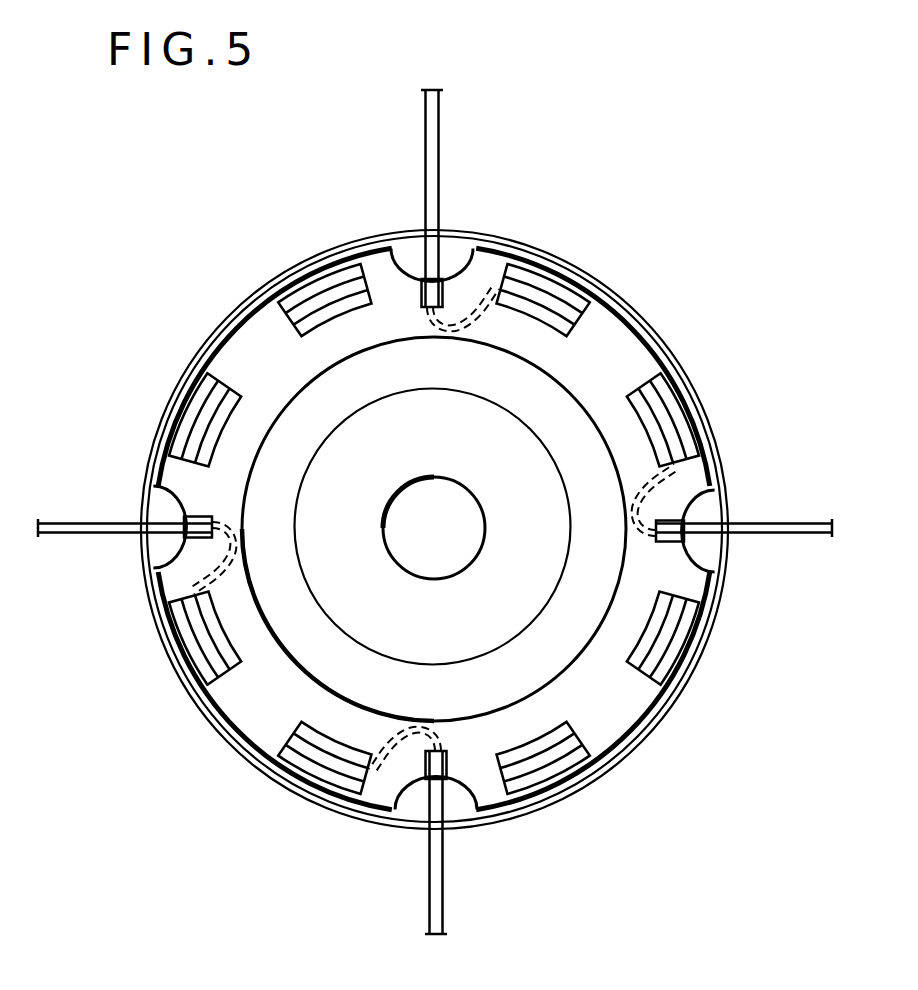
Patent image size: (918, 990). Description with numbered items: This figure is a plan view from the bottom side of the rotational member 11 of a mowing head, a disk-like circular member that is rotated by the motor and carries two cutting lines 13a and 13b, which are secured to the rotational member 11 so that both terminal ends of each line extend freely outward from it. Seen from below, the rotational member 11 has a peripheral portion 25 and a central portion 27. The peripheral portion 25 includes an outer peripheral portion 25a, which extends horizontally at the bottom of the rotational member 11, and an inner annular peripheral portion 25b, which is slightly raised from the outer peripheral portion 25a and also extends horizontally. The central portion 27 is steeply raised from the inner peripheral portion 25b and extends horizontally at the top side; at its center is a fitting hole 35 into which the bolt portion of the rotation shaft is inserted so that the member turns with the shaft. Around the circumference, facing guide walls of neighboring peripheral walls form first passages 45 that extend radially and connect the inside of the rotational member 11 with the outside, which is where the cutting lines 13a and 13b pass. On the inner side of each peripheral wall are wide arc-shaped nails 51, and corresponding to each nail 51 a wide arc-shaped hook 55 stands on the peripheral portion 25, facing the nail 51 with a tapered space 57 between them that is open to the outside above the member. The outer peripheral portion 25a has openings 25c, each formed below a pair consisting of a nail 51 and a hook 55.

The rotational member 11 is at (598, 238).
The cutting line 13a is at (440, 135).
The cutting line 13b is at (443, 862).
The peripheral portion 25 is at (215, 268).
The outer peripheral portion 25a is at (178, 462).
The inner annular peripheral portion 25b is at (293, 427).
The opening 25c is at (648, 737).
The central portion 27 is at (377, 420).
The fitting hole 35 is at (452, 490).
The first passage 45 is at (422, 283).
The nail 51 is at (673, 652).
The hook 55 is at (648, 624).
The space 57 is at (622, 522).